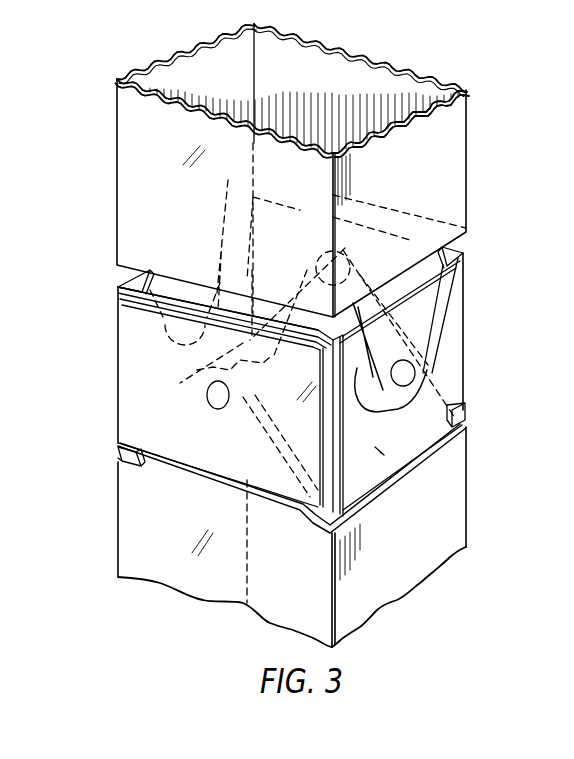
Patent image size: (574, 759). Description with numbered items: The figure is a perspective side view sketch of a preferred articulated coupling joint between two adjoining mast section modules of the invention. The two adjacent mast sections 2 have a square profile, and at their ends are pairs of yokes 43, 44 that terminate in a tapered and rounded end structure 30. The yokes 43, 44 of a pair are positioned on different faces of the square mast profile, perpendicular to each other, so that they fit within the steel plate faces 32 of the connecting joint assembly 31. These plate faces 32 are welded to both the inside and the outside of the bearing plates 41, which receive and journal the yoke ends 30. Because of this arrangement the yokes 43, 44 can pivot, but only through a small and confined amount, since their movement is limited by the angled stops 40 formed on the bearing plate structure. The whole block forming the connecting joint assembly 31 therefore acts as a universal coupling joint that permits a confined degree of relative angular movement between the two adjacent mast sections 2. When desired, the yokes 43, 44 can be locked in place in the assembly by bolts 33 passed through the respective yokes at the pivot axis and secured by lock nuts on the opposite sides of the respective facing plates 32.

The mast section 2 is at (466, 142).
The tapered and rounded end structure 30 is at (127, 428).
The connecting joint assembly 31 is at (117, 316).
The steel plate face 32 is at (460, 244).
The bolt 33 is at (206, 396).
The angled stop 40 is at (430, 373).
The bearing plate 41 is at (380, 452).
The yoke 43 is at (378, 268).
The yoke 44 is at (197, 440).